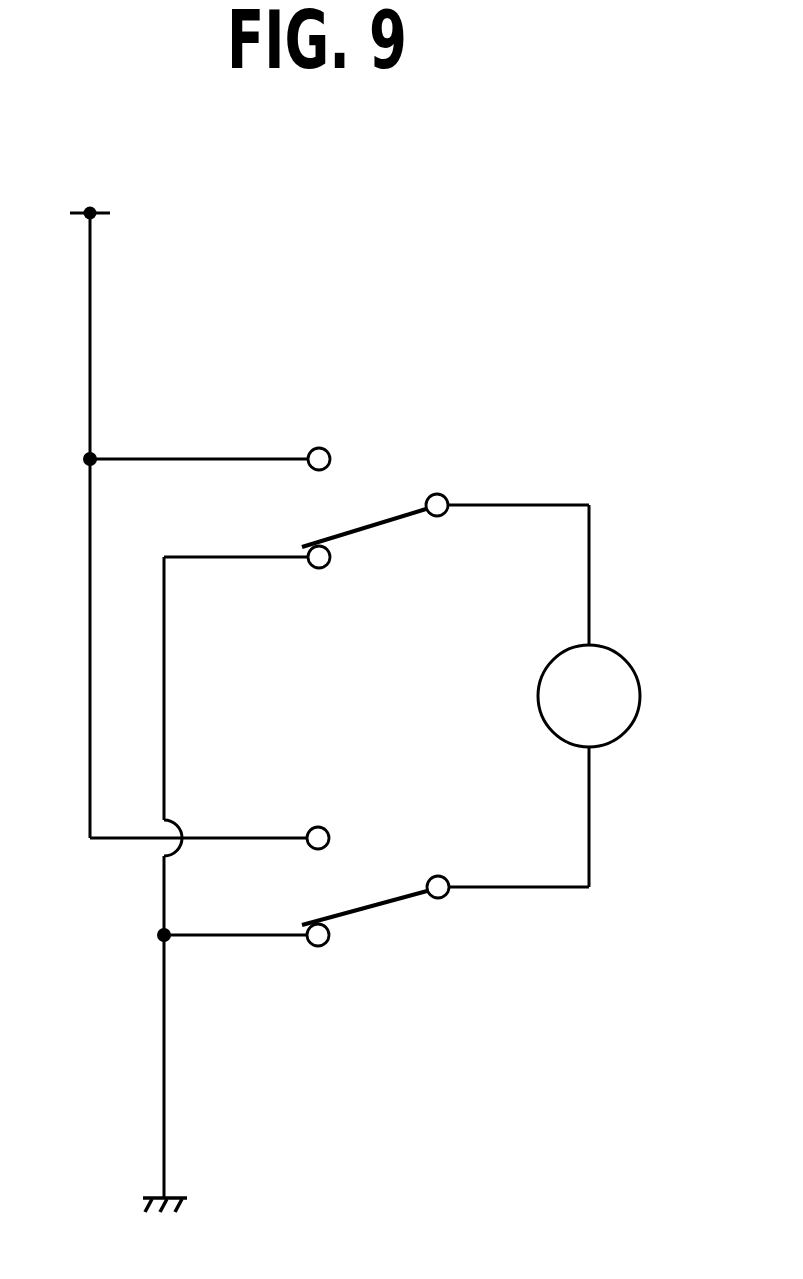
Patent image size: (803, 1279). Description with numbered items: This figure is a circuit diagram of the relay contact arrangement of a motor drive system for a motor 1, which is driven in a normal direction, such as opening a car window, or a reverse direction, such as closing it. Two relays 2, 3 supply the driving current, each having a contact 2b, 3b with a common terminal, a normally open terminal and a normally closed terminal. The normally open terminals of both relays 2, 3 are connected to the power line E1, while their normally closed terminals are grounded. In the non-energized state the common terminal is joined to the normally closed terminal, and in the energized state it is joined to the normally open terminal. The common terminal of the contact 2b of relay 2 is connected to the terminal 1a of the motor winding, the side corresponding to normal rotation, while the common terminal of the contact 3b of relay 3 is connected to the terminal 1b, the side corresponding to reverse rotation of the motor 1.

The motor 1 is at (622, 653).
The terminal 1a is at (589, 535).
The terminal 1b is at (589, 830).
The relay 2 is at (322, 389).
The contact 2b is at (360, 503).
The relay 3 is at (351, 913).
The contact 3b is at (360, 887).
The power line E1 is at (116, 216).